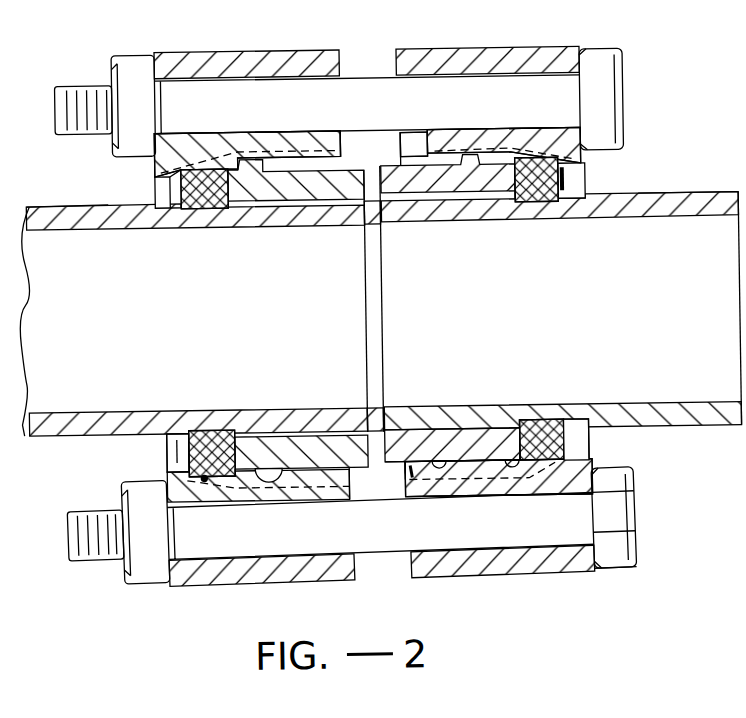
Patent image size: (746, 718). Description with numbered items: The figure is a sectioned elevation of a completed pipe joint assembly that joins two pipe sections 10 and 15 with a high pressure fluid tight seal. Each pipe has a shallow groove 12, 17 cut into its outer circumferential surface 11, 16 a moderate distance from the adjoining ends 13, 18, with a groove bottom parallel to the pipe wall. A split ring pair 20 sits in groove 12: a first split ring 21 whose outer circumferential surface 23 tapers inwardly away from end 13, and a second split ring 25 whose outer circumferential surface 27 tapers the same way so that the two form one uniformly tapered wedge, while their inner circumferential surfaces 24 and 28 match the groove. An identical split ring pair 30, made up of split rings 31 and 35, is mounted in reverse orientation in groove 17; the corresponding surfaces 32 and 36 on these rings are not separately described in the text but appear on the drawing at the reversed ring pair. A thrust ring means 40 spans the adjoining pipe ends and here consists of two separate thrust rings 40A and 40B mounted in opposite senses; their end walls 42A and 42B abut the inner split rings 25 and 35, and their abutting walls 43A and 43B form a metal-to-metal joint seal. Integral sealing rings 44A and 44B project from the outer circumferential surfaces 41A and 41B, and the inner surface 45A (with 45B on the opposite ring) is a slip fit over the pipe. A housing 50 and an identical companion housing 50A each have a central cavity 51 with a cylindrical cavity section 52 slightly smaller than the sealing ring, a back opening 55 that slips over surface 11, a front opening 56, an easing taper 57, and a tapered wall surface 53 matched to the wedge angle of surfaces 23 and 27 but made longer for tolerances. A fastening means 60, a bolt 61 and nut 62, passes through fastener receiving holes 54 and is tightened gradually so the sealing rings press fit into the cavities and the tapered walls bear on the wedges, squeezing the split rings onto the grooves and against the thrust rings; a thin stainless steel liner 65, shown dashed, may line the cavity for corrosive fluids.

The pipe section 10 is at (674, 186).
The outer circumferential surface 11 is at (626, 182).
The shallow groove 12 is at (568, 222).
The adjoining end 13 is at (382, 215).
The pipe section 15 is at (62, 196).
The outer circumferential surface 16 is at (108, 200).
The shallow groove 17 is at (240, 216).
The adjoining end 18 is at (366, 200).
The split ring pair 20 is at (605, 478).
The first split ring 21 is at (556, 437).
The outer circumferential surface 23 is at (600, 516).
The inner circumferential surface 24 is at (553, 430).
The second split ring 25 is at (530, 480).
The outer circumferential surface 27 is at (497, 492).
The inner circumferential surface 28 is at (520, 430).
The split ring pair 30 is at (162, 492).
The split ring 31 is at (193, 442).
The lower left seal 32 is at (197, 474).
The split ring 35 is at (222, 465).
The seal contact 36 is at (204, 480).
The thrust ring means 40 is at (387, 158).
The thrust ring 40A is at (433, 177).
The thrust ring 40B is at (310, 175).
The outer circumferential surface 41A is at (455, 185).
The outer circumferential surface 41B is at (280, 150).
The end wall 42A is at (497, 222).
The end wall 42B is at (247, 203).
The abutting wall 43A is at (407, 221).
The abutting wall 43B is at (348, 222).
The integral sealing ring 44A is at (493, 152).
The integral sealing ring 44B is at (245, 148).
The inner surface 45A is at (443, 221).
The upper left flange shoulder 45B is at (300, 221).
The housing 50 is at (585, 625).
The companion housing 50A is at (290, 620).
The central cavity 51 is at (435, 505).
The cylindrical cavity section 52 is at (405, 527).
The tapered wall surface 53 is at (475, 492).
The fastener receiving holes 54 is at (610, 544).
The back opening 55 is at (592, 436).
The front opening 56 is at (405, 470).
The taper 57 is at (414, 470).
The fastening means 60 is at (372, 81).
The bolt 61 is at (612, 103).
The nut 62 is at (133, 65).
The stainless steel liner 65 is at (417, 140).